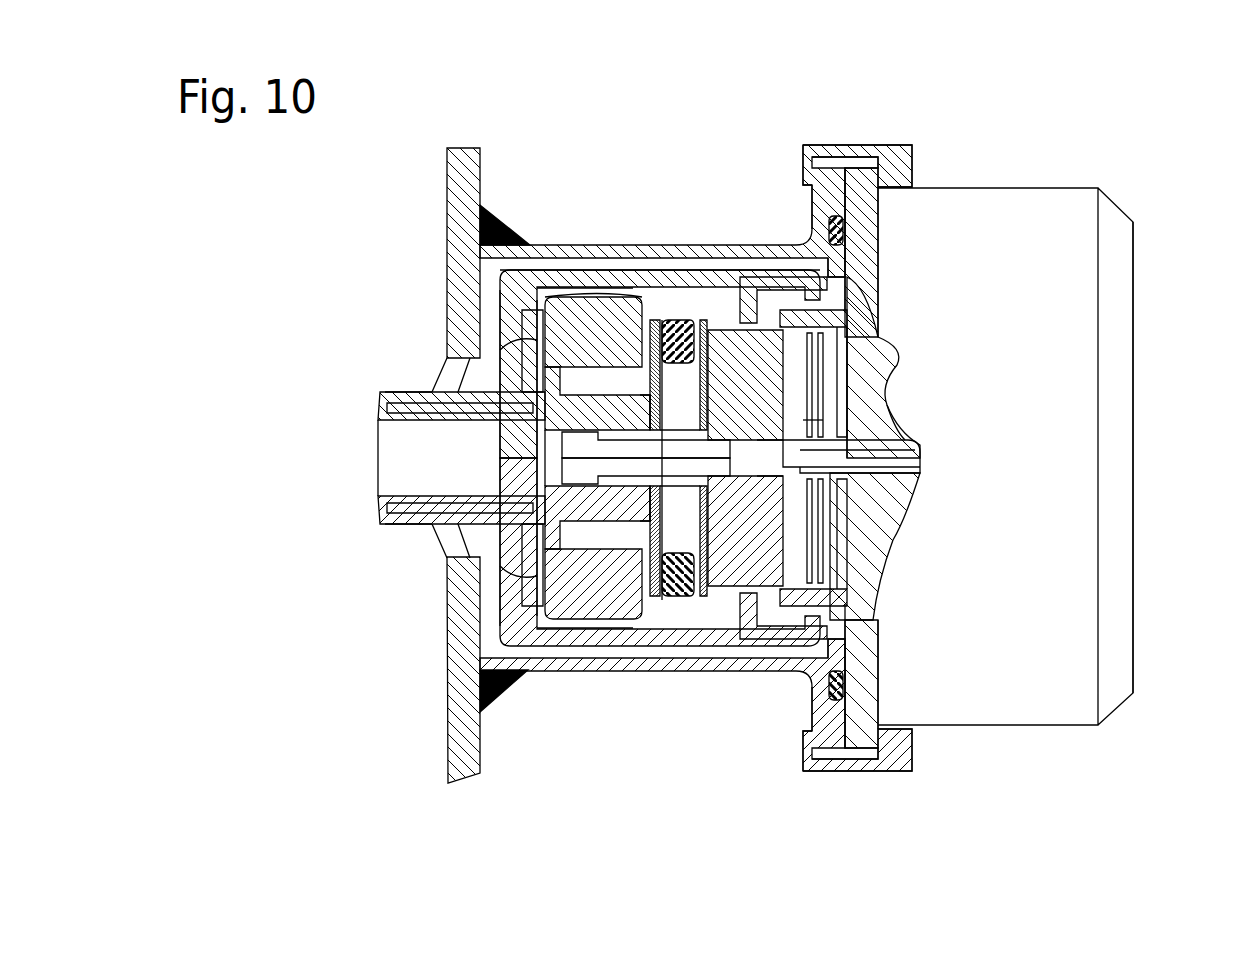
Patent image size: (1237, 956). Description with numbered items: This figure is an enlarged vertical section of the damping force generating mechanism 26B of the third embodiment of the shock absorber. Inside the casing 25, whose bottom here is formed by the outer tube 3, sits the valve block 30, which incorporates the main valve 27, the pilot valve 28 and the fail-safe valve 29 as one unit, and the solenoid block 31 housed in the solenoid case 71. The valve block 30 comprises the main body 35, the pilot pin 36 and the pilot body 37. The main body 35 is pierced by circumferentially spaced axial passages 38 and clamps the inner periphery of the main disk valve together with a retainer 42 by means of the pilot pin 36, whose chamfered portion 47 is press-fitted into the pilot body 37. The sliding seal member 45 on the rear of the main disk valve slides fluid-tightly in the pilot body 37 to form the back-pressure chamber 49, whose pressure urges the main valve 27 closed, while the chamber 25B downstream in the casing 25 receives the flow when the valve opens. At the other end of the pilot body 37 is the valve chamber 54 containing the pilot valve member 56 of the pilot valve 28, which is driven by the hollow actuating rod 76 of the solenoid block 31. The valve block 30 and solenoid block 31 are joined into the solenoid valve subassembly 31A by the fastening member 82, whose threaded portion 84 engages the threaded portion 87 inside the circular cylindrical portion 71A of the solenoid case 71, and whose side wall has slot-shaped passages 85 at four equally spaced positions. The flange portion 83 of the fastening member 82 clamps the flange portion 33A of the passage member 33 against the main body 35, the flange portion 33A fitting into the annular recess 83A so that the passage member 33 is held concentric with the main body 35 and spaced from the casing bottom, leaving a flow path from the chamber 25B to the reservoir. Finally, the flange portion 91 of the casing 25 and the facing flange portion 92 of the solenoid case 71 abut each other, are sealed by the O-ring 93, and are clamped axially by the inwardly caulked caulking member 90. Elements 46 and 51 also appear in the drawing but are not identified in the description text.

The outer tube 3 is at (464, 150).
The casing 25 is at (540, 250).
The chamber 25B is at (497, 226).
The damping force generating mechanism 26B is at (720, 150).
The main valve 27 is at (678, 300).
The pilot valve 28 is at (805, 660).
The fail-safe valve 29 is at (785, 410).
The valve block 30 is at (612, 300).
The solenoid block 31 is at (1145, 258).
The solenoid valve subassembly 31A is at (600, 270).
The passage member 33 is at (395, 450).
The flange portion 33A is at (500, 560).
The main body 35 is at (590, 600).
The pilot pin 36 is at (395, 408).
The pilot body 37 is at (720, 610).
The passages 38 is at (560, 615).
The retainer 42 is at (642, 620).
The sliding seal member 45 is at (668, 600).
The valve stem 46 is at (560, 462).
The chamfered portion 47 is at (705, 330).
The back-pressure chamber 49 is at (678, 345).
The retainer flange 51 is at (758, 283).
The valve chamber 54 is at (862, 375).
The pilot valve member 56 is at (885, 410).
The solenoid case 71 is at (1002, 725).
The circular cylindrical portion 71A is at (762, 620).
The actuating rod 76 is at (913, 440).
The fastening member 82 is at (575, 272).
The flange portion 83 is at (510, 300).
The annular recess 83A is at (520, 345).
The threaded portion 84 is at (830, 280).
The passages 85 is at (655, 320).
The threaded portion 87 is at (858, 300).
The caulking member 90 is at (860, 145).
The flange portion 91 is at (830, 750).
The flange portion 92 is at (858, 750).
The O-ring 93 is at (845, 232).